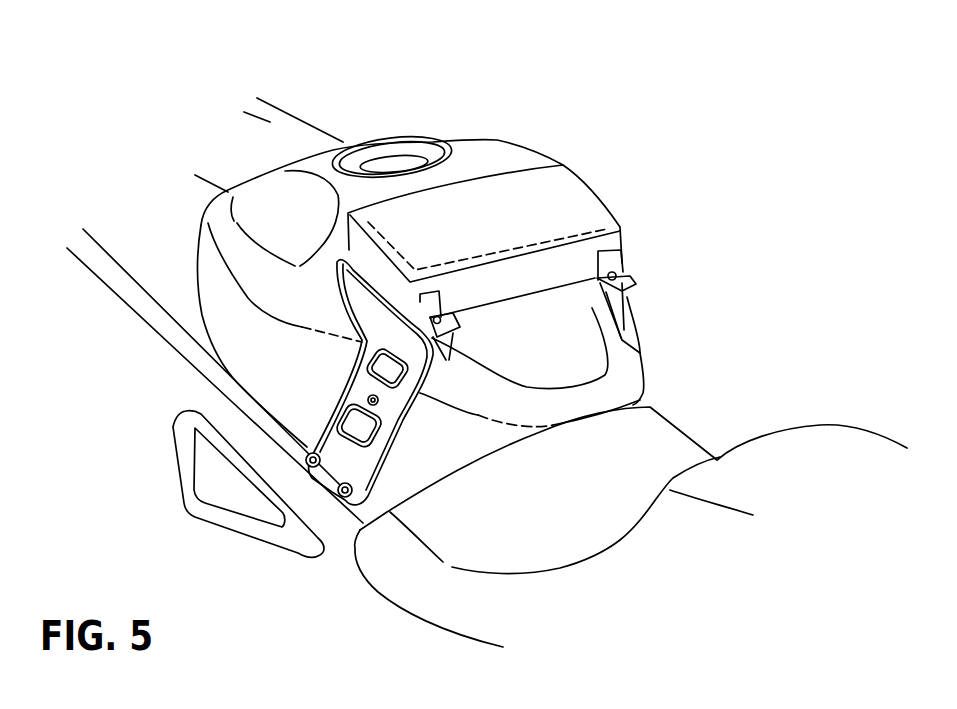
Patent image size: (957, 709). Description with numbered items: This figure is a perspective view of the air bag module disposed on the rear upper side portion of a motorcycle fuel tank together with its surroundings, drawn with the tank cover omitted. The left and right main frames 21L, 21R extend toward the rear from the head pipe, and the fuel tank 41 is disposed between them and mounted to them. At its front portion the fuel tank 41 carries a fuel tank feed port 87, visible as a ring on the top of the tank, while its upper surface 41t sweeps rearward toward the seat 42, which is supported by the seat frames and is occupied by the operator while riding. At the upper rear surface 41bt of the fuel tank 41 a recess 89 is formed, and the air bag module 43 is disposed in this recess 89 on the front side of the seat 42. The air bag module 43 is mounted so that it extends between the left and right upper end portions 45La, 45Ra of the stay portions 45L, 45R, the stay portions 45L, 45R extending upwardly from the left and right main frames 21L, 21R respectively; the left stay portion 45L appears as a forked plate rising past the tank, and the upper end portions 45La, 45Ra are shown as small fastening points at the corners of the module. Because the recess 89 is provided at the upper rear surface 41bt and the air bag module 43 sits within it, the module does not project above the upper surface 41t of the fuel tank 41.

The main frame 21R is at (262, 112).
The main frame 21L is at (80, 248).
The fuel tank feed port 87 is at (392, 148).
The upper surface 41t is at (462, 157).
The fuel tank 41 is at (497, 136).
The air bag module 43 is at (562, 199).
The upper end portion 45Ra is at (625, 265).
The stay portion 45R is at (625, 291).
The upper rear surface 41bt is at (570, 302).
The recess 89 is at (555, 317).
The seat 42 is at (650, 455).
The stay portion 45L is at (358, 388).
The upper end portion 45La is at (437, 385).